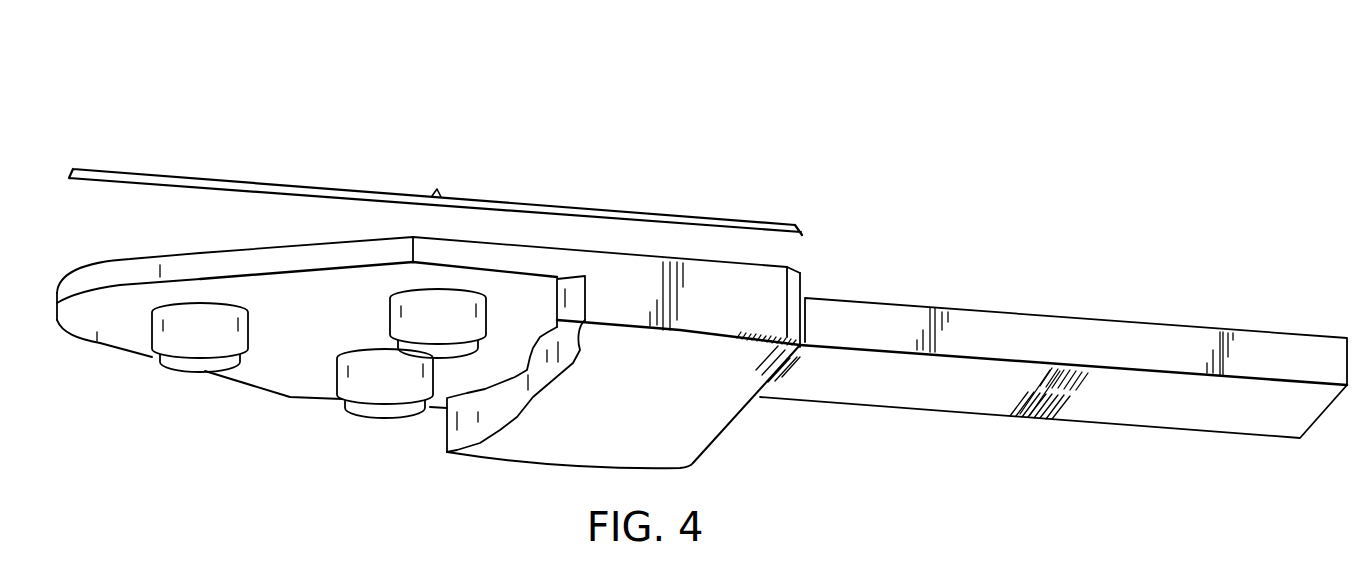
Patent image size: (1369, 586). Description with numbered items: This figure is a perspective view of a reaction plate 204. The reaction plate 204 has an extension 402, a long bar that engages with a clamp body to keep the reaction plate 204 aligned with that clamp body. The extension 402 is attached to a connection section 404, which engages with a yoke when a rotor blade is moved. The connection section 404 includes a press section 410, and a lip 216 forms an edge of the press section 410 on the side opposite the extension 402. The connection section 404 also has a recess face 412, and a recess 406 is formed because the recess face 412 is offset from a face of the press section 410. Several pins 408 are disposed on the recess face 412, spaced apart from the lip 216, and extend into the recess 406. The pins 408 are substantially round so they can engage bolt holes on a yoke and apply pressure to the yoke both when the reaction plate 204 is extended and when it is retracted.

The reaction plate 204 is at (883, 85).
The lip 216 is at (442, 434).
The extension 402 is at (1076, 317).
The connection section 404 is at (435, 196).
The recess 406 is at (243, 407).
The pins 408 is at (187, 374).
The press section 410 is at (717, 424).
The recess face 412 is at (97, 334).